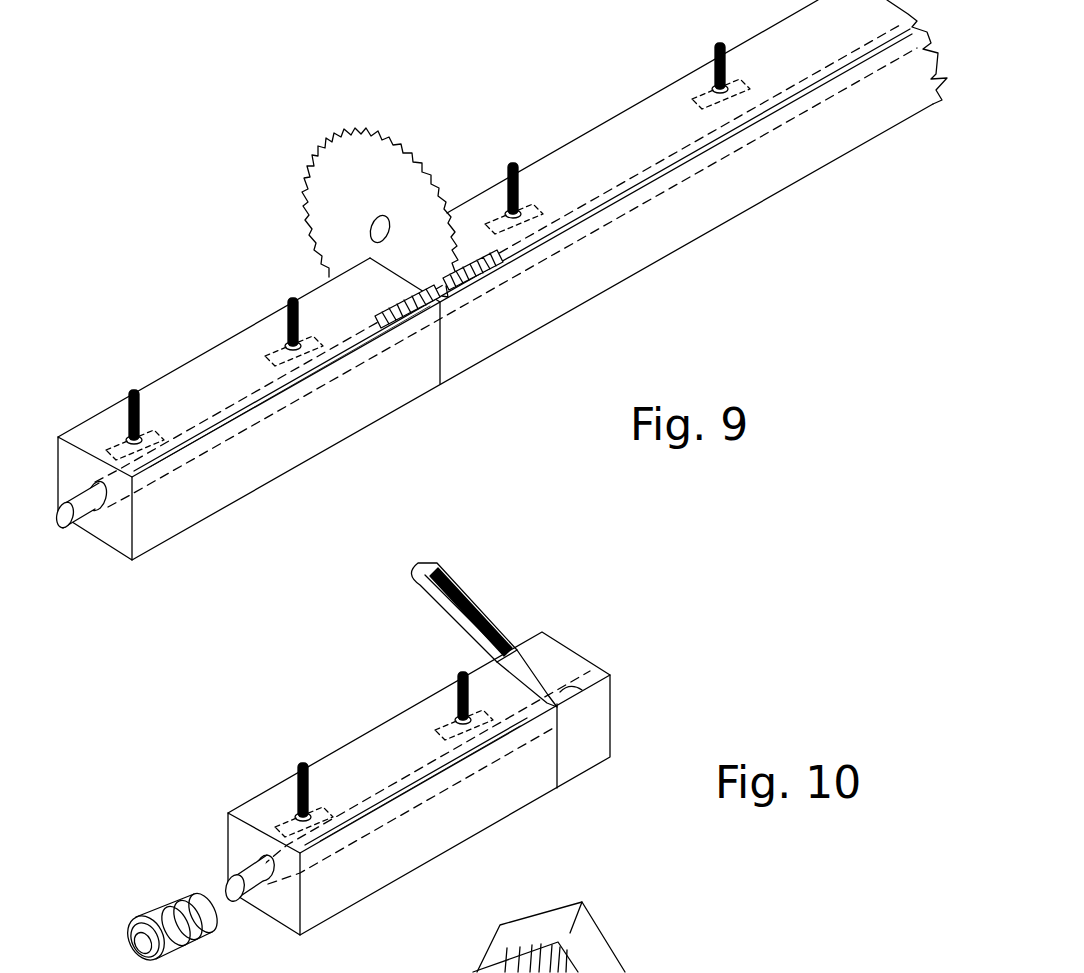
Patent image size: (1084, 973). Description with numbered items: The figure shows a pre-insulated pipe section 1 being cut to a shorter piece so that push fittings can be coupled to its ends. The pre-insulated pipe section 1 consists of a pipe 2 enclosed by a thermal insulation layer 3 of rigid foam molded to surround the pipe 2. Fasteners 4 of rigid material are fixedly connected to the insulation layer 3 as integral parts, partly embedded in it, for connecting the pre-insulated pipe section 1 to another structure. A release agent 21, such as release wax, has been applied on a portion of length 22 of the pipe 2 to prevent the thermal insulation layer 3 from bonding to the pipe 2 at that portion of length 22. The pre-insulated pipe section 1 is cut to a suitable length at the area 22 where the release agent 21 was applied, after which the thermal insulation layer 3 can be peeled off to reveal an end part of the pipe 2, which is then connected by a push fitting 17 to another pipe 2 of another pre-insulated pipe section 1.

In FIG. 9, the pre-insulated pipe section 1 is at (203, 360).
In FIG. 10, the pre-insulated pipe section 1 is at (363, 730).
In FIG. 9, the pipe 2 is at (273, 410).
In FIG. 10, the pipe 2 is at (395, 813).
In FIG. 9, the thermal insulation layer 3 is at (240, 477).
In FIG. 10, the thermal insulation layer 3 is at (473, 813).
In FIG. 9, the fasteners 4 is at (130, 392).
In FIG. 10, the fasteners 4 is at (297, 762).
In FIG. 10, the push fitting 17 is at (167, 912).
In FIG. 9, the release agent 21 is at (397, 340).
In FIG. 9, the portion of length 22 is at (478, 288).